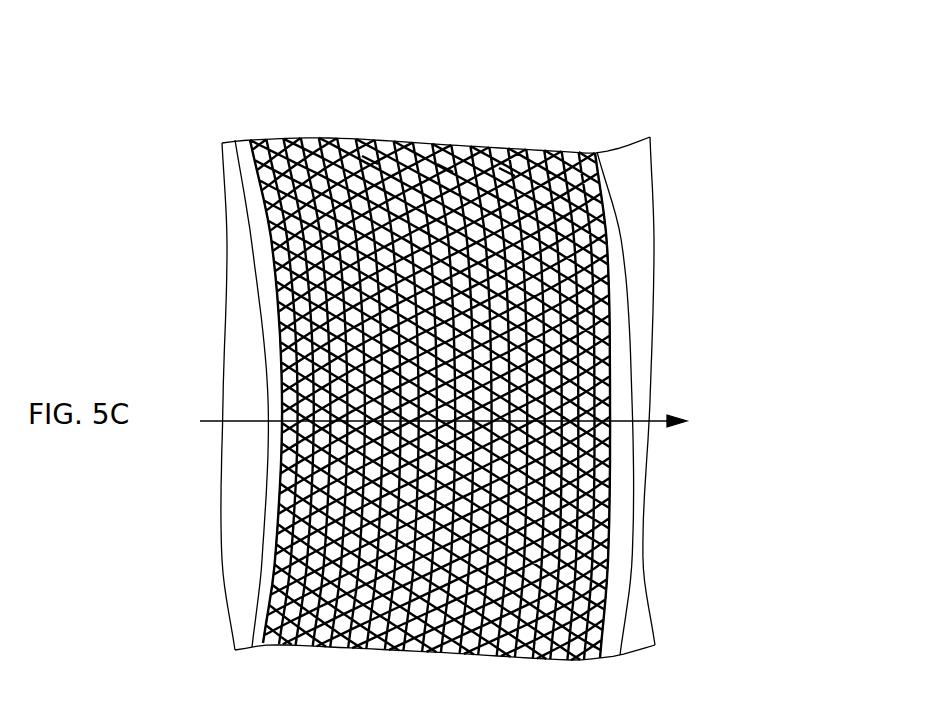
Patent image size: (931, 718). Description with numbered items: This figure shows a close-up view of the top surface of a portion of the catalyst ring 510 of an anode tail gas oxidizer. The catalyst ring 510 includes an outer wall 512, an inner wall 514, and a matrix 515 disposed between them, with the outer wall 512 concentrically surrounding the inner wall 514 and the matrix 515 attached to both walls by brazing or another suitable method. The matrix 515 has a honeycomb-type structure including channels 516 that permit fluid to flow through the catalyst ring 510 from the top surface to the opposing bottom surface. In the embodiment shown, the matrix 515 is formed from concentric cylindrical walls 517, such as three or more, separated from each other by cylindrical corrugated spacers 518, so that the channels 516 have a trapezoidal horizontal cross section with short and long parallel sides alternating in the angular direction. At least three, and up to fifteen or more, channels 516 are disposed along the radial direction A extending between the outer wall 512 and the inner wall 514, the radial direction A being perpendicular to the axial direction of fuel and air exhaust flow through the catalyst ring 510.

The catalyst ring 510 is at (697, 304).
The outer wall 512 is at (610, 254).
The inner wall 514 is at (264, 310).
The matrix 515 is at (538, 80).
The channels 516 is at (373, 155).
The concentric cylindrical walls 517 is at (448, 162).
The cylindrical corrugated spacers 518 is at (509, 166).
The radial direction A is at (246, 421).